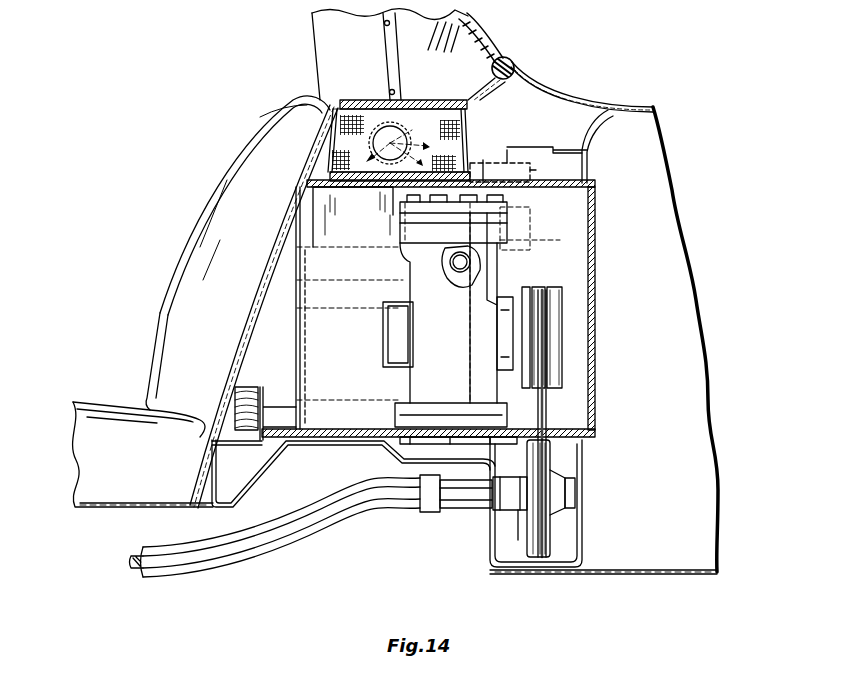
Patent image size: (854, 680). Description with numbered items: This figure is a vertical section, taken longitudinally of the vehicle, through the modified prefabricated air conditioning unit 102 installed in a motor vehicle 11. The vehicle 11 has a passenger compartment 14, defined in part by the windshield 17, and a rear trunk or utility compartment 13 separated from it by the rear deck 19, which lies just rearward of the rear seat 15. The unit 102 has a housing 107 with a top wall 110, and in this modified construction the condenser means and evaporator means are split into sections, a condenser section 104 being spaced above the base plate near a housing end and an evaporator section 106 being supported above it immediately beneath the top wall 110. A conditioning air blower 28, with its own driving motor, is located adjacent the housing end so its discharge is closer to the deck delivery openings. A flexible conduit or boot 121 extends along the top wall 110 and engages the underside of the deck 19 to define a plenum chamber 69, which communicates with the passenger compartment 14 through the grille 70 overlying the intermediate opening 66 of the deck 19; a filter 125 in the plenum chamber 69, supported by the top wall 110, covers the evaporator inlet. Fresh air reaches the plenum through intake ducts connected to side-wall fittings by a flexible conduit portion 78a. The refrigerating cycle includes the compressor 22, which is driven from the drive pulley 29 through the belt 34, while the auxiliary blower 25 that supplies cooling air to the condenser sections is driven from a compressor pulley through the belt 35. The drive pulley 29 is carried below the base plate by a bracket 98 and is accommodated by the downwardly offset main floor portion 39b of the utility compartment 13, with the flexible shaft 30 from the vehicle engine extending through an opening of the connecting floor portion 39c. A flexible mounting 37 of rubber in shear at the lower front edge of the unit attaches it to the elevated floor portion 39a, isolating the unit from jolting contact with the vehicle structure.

The motor vehicle 11 is at (312, 68).
The utility compartment 13 is at (680, 277).
The passenger compartment 14 is at (347, 33).
The rear seat 15 is at (227, 177).
The windshield 17 is at (493, 42).
The rear deck 19 is at (480, 99).
The compressor 22 is at (403, 292).
The blower 25 is at (368, 228).
The blower 28 is at (483, 163).
The drive pulley 29 is at (560, 475).
The flexible shaft 30 is at (329, 526).
The belt 34 is at (560, 410).
The belt 35 is at (560, 327).
The flexible mounting 37 is at (247, 387).
The elevated floor portion 39a is at (298, 447).
The main floor portion 39b is at (618, 572).
The connecting floor portion 39c is at (489, 552).
The intermediate opening 66 is at (379, 100).
The plenum chamber 69 is at (343, 140).
The grille 70 is at (424, 100).
The flexible conduit portion 78a is at (407, 133).
The bracket 98 is at (517, 522).
The modified unit 102 is at (422, 308).
The condenser section 104 is at (292, 323).
The evaporator section 106 is at (332, 208).
The housing 107 is at (597, 242).
The top wall 110 is at (558, 182).
The flexible conduit 121 is at (402, 123).
The filter 125 is at (333, 198).